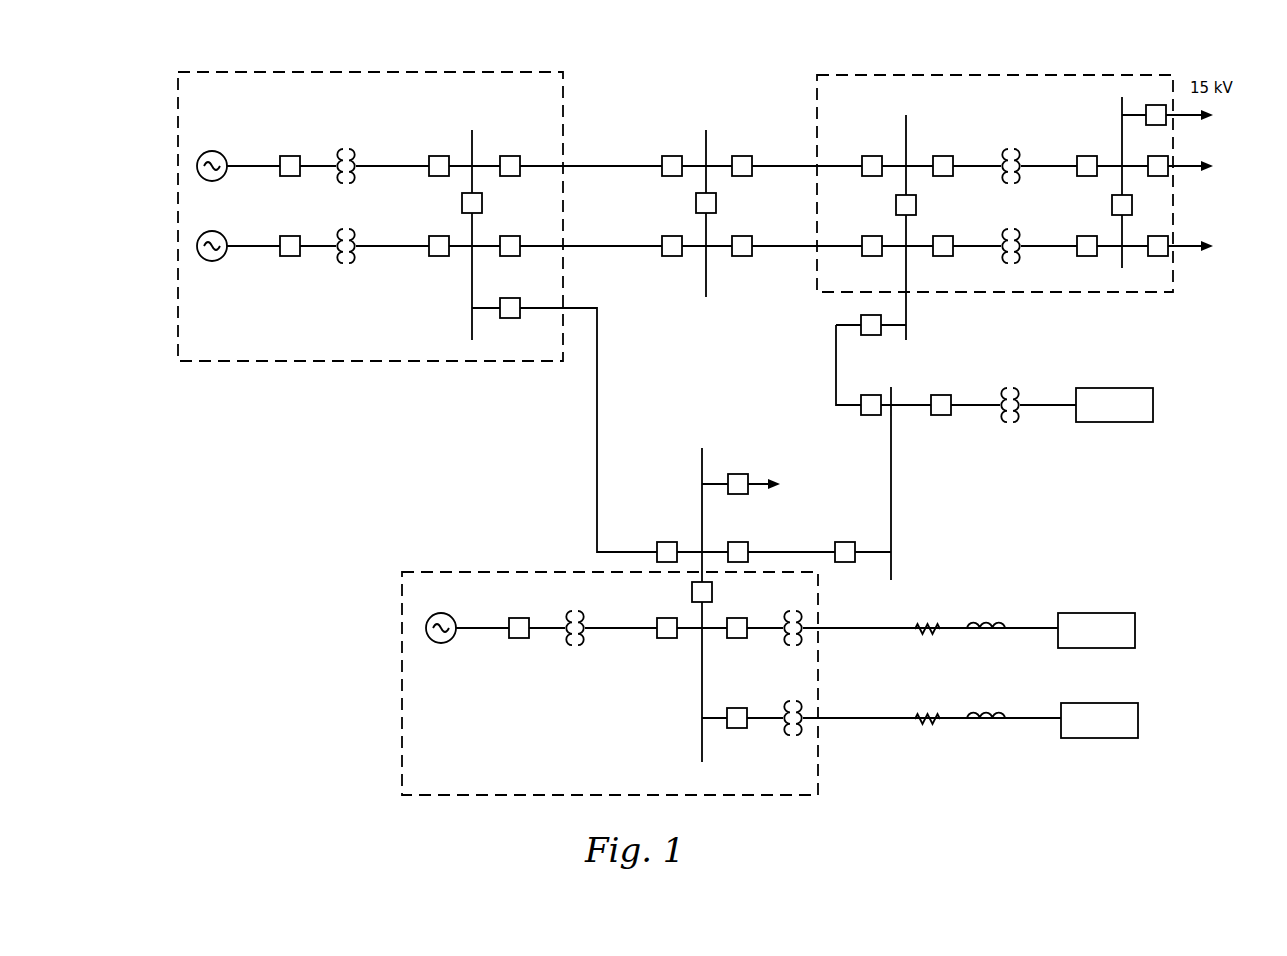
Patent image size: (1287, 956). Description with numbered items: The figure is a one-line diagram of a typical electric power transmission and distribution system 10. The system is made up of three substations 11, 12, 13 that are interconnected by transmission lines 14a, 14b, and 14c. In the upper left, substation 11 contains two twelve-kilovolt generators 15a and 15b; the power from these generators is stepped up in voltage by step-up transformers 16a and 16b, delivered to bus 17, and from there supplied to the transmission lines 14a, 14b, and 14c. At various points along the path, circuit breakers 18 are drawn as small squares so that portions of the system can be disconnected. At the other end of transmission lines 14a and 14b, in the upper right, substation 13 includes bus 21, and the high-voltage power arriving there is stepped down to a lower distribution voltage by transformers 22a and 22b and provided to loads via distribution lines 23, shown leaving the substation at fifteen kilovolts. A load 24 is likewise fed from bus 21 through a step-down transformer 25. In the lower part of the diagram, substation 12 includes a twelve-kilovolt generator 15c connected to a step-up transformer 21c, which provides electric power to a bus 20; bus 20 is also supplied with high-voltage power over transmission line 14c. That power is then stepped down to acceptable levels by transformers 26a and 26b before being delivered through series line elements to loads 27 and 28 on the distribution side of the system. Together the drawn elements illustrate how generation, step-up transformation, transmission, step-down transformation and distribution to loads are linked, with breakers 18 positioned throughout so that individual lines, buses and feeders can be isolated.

The electric power transmission and distribution system 10 is at (745, 81).
The substation 11 is at (565, 110).
The substation 12 is at (481, 572).
The substation 13 is at (1059, 75).
The transmission line 14a is at (622, 166).
The transmission line 14b is at (610, 246).
The transmission line 14c is at (622, 552).
The generator 15a is at (220, 182).
The generator 15b is at (220, 262).
The generator 15c is at (447, 647).
The step-up transformer 16a is at (347, 148).
The step-up transformer 16b is at (349, 228).
The bus 17 is at (470, 139).
The circuit breaker 18 is at (512, 177).
The bus 20 is at (702, 468).
The bus 21 is at (906, 142).
The step-up transformer 21c is at (576, 610).
The transformer 22a is at (1018, 154).
The transformer 22b is at (1018, 234).
The distribution line 23 is at (1196, 118).
The load 24 is at (1153, 405).
The step-down transformer 25 is at (1017, 393).
The transformer 26a is at (796, 612).
The transformer 26b is at (796, 738).
The load 27 is at (1135, 630).
The load 28 is at (1138, 720).